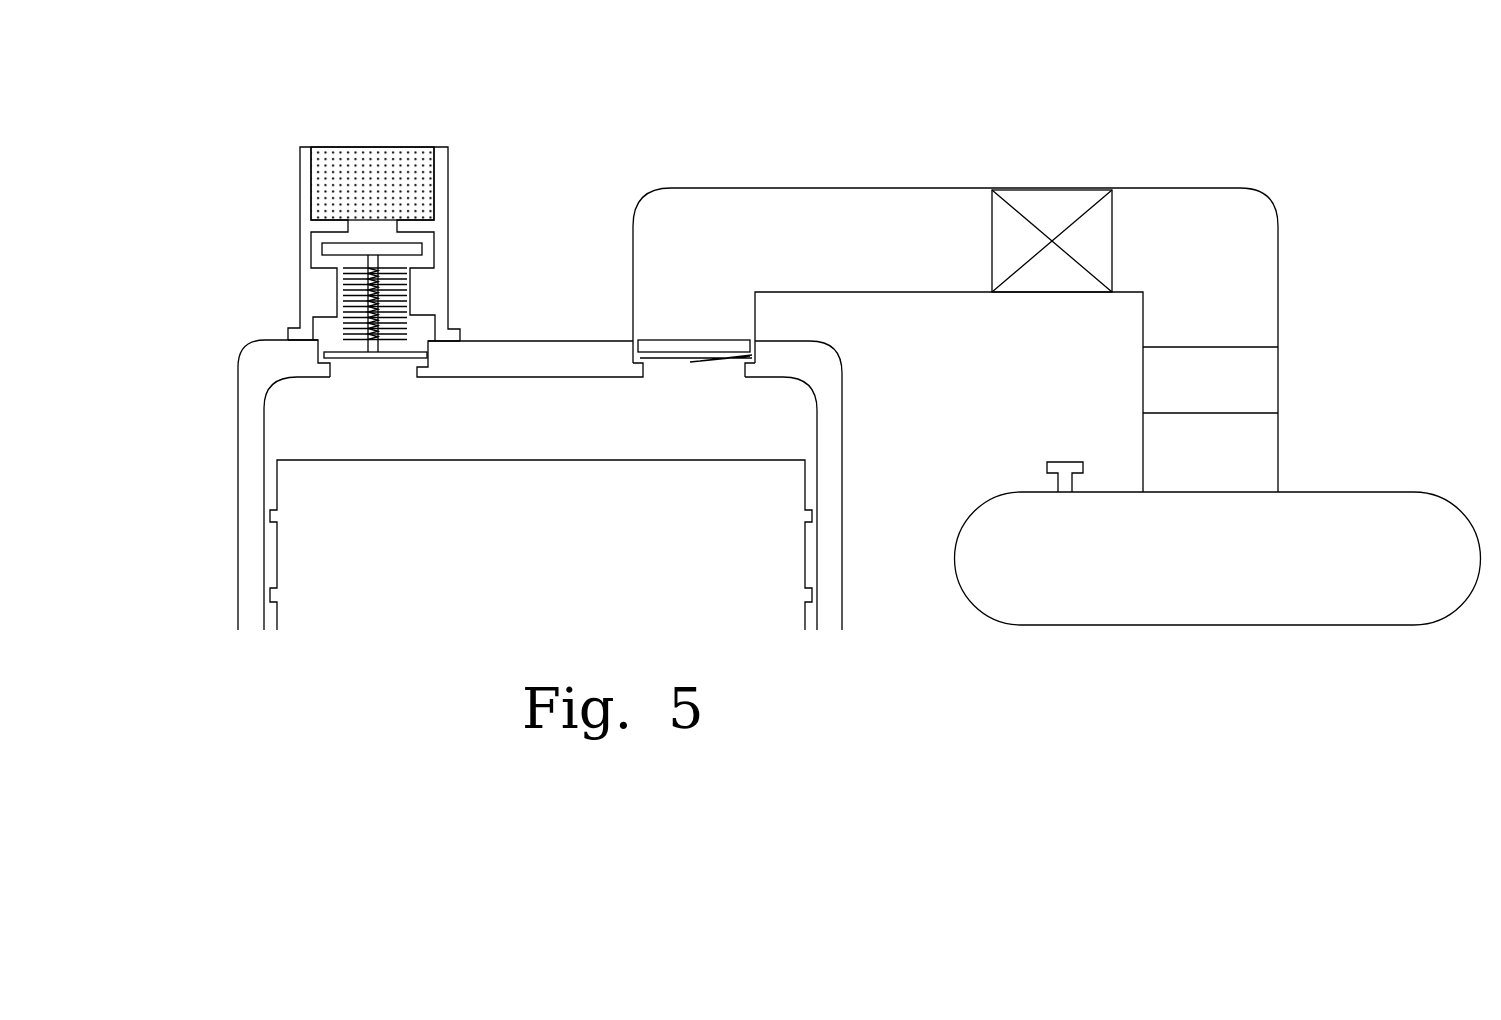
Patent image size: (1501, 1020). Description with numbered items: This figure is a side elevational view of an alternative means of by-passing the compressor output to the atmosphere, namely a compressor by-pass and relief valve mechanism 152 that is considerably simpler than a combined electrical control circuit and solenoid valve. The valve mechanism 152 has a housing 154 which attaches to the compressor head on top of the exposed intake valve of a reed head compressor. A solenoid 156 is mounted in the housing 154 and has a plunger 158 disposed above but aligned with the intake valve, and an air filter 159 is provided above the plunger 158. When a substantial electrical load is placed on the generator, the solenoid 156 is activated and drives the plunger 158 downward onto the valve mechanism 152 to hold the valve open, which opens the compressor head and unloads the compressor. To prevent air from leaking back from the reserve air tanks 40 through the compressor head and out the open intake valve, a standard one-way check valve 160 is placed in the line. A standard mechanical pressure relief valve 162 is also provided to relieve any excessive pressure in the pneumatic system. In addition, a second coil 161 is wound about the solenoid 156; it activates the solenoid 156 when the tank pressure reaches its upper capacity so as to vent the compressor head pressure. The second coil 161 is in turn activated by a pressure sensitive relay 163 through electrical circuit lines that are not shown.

The reserve air tanks 40 is at (1067, 625).
The compressor by-pass and relief valve mechanism 152 is at (382, 360).
The housing 154 is at (300, 200).
The solenoid 156 is at (347, 298).
The plunger 158 is at (440, 341).
The air filter 159 is at (355, 157).
The one-way check valve 160 is at (1054, 208).
The second coil 161 is at (413, 283).
The mechanical pressure relief valve 162 is at (1075, 460).
The pressure sensitive relay 163 is at (1278, 383).